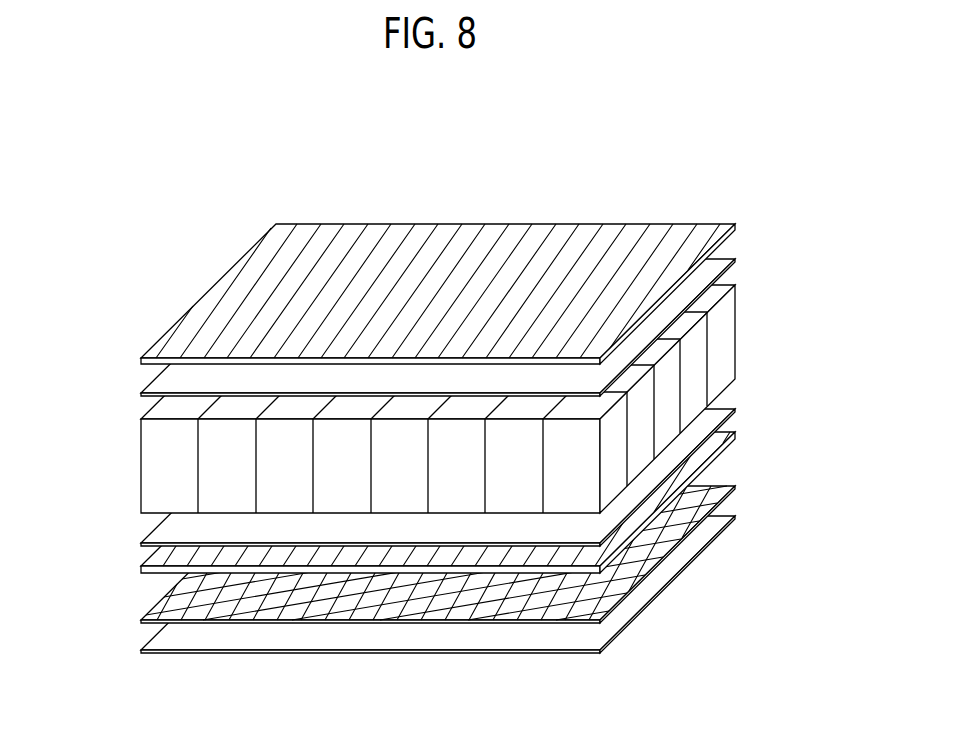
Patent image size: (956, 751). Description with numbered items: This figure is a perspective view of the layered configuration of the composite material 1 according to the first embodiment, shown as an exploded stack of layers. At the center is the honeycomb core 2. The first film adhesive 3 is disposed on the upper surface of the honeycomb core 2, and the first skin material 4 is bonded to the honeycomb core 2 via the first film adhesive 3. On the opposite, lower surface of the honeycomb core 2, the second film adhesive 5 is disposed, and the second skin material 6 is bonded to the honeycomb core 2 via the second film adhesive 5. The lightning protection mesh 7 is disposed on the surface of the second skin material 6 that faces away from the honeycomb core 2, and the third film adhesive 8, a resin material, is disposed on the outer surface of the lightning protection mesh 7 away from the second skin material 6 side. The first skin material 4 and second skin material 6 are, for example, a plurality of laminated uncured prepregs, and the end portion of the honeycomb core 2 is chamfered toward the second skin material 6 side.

The composite material 1 is at (158, 174).
The honeycomb core 2 is at (723, 332).
The first film adhesive 3 is at (737, 258).
The first skin material 4 is at (703, 231).
The second film adhesive 5 is at (725, 405).
The second skin material 6 is at (728, 430).
The lightning protection mesh 7 is at (718, 483).
The third film adhesive 8 is at (725, 512).